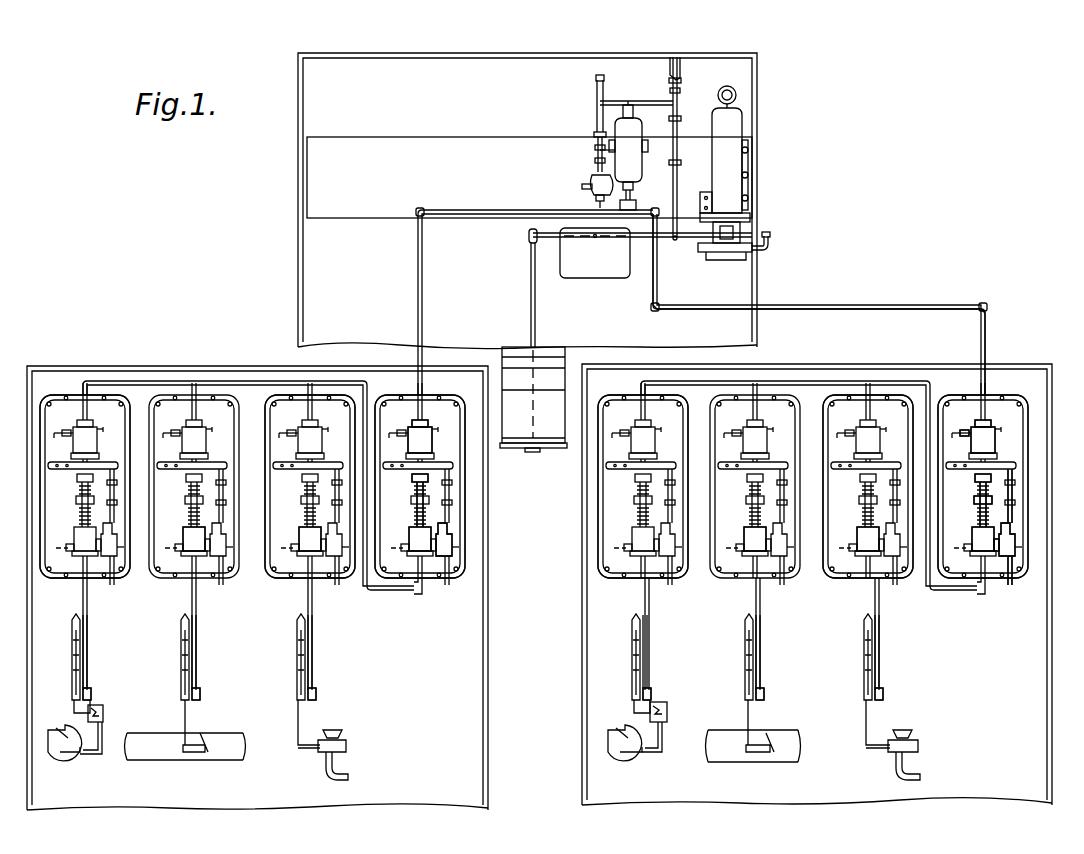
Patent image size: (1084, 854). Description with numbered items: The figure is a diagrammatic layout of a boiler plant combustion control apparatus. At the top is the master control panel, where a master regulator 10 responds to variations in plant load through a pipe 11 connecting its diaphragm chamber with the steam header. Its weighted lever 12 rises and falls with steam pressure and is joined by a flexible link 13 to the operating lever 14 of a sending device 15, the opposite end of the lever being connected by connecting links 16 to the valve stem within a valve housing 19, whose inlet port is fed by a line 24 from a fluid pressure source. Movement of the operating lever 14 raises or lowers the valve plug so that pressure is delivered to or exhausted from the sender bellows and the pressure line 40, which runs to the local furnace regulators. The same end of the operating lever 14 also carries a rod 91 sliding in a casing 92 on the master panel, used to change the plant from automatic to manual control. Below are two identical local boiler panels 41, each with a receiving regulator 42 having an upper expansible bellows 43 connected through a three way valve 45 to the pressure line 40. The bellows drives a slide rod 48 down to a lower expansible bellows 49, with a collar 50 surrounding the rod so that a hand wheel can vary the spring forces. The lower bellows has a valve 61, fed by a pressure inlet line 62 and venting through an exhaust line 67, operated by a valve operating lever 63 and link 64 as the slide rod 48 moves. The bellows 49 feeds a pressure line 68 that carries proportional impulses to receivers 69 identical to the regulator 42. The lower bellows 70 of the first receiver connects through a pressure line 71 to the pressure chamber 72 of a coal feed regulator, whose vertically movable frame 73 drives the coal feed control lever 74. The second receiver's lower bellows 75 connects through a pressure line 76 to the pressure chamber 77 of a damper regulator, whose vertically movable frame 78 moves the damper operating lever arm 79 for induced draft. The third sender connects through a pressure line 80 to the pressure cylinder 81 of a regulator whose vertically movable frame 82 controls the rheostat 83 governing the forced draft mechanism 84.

The master regulator 10 is at (730, 163).
The pipe 11 is at (772, 244).
The weighted lever 12 is at (665, 240).
The flexible link 13 is at (684, 155).
The operating lever 14 is at (648, 98).
The sending device 15 is at (634, 160).
The connecting links 16 is at (597, 122).
The valve housing 19 is at (592, 180).
The line 24 is at (582, 187).
The pressure line 40 is at (690, 311).
The local boiler panel 41 is at (55, 378).
The receiving regulator 42 is at (455, 455).
The upper expansible bellows 43 is at (427, 445).
The three way valve 45 is at (421, 426).
The slide rod 48 is at (415, 493).
The lower expansible bellows 49 is at (414, 537).
The collar 50 is at (978, 501).
The valve 61 is at (452, 541).
The pressure inlet line 62 is at (1012, 568).
The valve operating lever 63 is at (974, 465).
The link 64 is at (1014, 487).
The exhaust line 67 is at (1004, 575).
The pressure line 68 is at (374, 398).
The receivers 69 is at (270, 556).
The lower bellows 70 is at (299, 535).
The pressure line 71 is at (313, 650).
The pressure chamber 72 is at (316, 695).
The vertically movable frame 73 is at (295, 672).
The coal feed control lever 74 is at (311, 752).
The lower bellows 75 is at (185, 532).
The pressure line 76 is at (197, 662).
The pressure chamber 77 is at (200, 697).
The vertically movable frame 78 is at (180, 675).
The damper operating lever arm 79 is at (193, 752).
The pressure line 80 is at (88, 655).
The pressure cylinder 81 is at (89, 694).
The vertically movable frame 82 is at (74, 667).
The rheostat 83 is at (103, 713).
The forced draft mechanism 84 is at (66, 758).
The rod 91 is at (680, 92).
The casing 92 is at (682, 68).